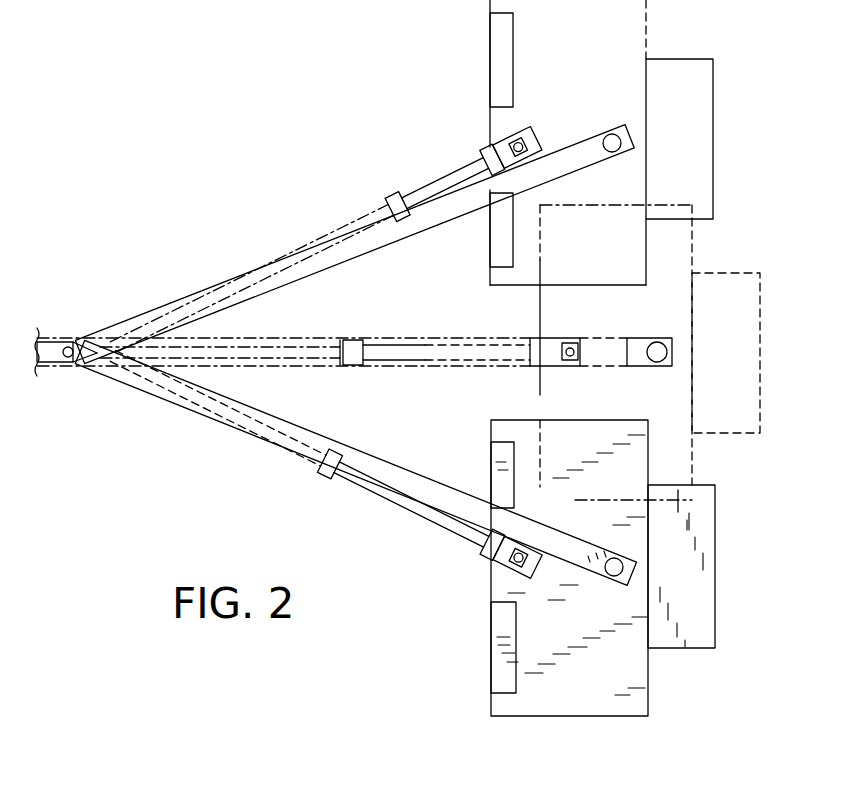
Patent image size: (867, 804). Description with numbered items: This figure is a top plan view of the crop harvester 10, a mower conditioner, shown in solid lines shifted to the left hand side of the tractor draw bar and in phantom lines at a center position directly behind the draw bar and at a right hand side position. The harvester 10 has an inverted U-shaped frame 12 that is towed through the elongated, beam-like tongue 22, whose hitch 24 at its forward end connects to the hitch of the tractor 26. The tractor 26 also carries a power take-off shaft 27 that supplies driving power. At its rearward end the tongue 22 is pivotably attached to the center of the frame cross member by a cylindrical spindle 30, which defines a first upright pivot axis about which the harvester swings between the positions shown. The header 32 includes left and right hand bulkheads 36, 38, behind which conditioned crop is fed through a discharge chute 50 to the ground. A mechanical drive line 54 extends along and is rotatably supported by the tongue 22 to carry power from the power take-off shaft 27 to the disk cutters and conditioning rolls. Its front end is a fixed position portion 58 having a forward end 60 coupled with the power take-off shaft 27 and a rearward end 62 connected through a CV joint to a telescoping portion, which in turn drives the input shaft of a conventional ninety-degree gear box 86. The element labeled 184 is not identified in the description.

The crop harvester 10 is at (668, 695).
The frame 12 is at (567, 718).
The tongue 22 is at (447, 503).
The hitch 24 is at (78, 340).
The tractor 26 is at (40, 340).
The power take-off shaft 27 is at (38, 365).
The cylindrical spindle 30 is at (632, 560).
The header 32 is at (517, 109).
The left hand bulkhead 36 is at (497, 441).
The right hand bulkhead 38 is at (493, 705).
The discharge chute 50 is at (700, 633).
The mechanical drive line 54 is at (272, 505).
The fixed position portion 58 is at (197, 403).
The forward end 60 is at (78, 366).
The rearward end 62 is at (322, 446).
The gear box 86 is at (533, 580).
The piston rod 184 is at (403, 518).